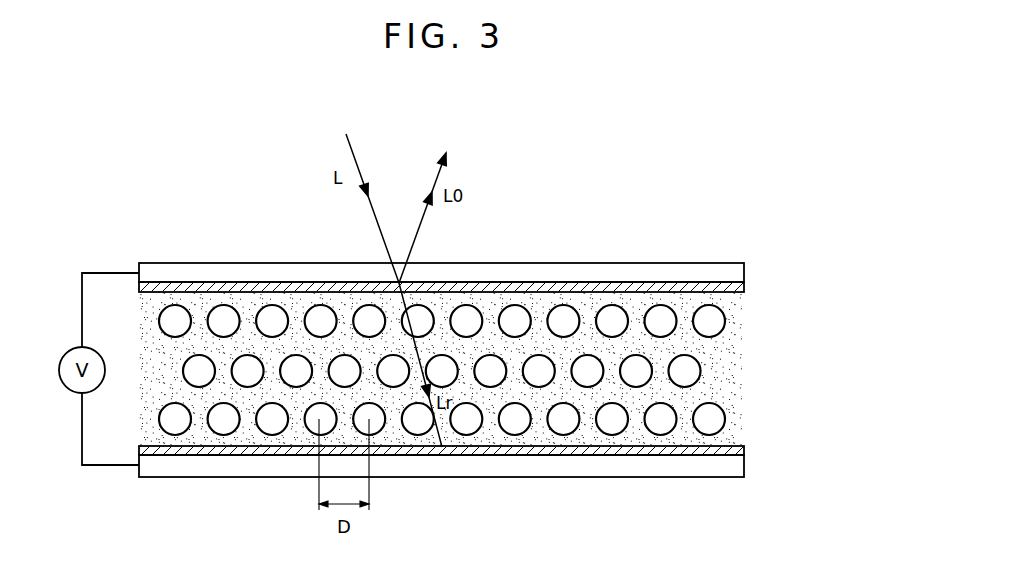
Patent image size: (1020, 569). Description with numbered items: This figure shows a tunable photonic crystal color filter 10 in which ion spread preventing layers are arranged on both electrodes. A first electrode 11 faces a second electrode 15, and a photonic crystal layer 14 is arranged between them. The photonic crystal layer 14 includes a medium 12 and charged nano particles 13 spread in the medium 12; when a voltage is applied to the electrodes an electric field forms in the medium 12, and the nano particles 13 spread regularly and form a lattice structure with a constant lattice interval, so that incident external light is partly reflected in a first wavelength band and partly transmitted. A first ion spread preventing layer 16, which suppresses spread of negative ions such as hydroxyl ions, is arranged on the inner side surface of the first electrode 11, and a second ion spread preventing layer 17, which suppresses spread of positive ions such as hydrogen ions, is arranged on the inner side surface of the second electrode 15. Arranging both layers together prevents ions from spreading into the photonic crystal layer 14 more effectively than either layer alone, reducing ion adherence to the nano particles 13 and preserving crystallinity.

The tunable photonic crystal color filter 10 is at (497, 339).
The first electrode 11 is at (744, 274).
The medium 12 is at (730, 371).
The nano particles 13 is at (725, 323).
The photonic crystal layer 14 is at (497, 369).
The second electrode 15 is at (744, 468).
The first ion spread preventing layer 16 is at (744, 287).
The second ion spread preventing layer 17 is at (744, 451).